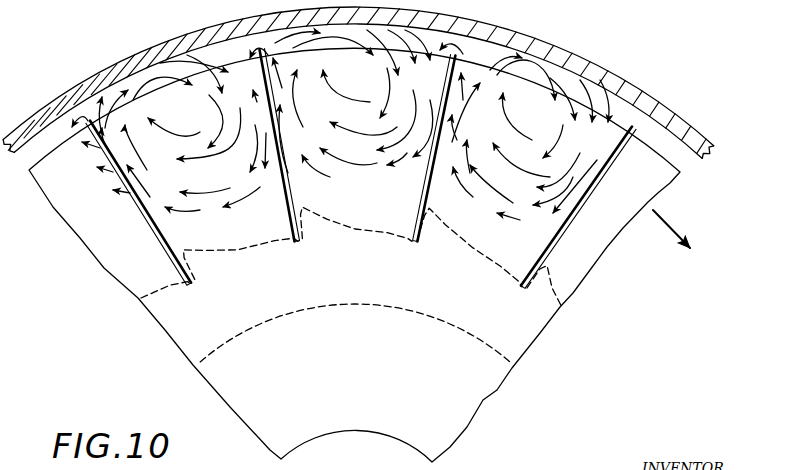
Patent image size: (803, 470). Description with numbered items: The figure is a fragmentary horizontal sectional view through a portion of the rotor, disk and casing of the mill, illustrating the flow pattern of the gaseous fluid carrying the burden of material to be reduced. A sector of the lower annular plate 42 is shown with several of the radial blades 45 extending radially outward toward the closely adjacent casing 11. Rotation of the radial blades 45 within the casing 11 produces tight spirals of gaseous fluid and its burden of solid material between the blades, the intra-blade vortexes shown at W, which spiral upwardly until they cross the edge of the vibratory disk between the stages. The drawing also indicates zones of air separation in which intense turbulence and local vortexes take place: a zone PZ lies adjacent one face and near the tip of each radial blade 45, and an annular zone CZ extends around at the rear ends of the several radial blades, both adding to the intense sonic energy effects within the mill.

The casing 11 is at (634, 84).
The lower annular plate 42 is at (474, 403).
The radial blades 45 is at (170, 254).
The intra-blade vortexes W is at (193, 126).
The zones of air separation adjacent blade tips PZ is at (430, 110).
The annular zone of air separation CZ is at (351, 285).